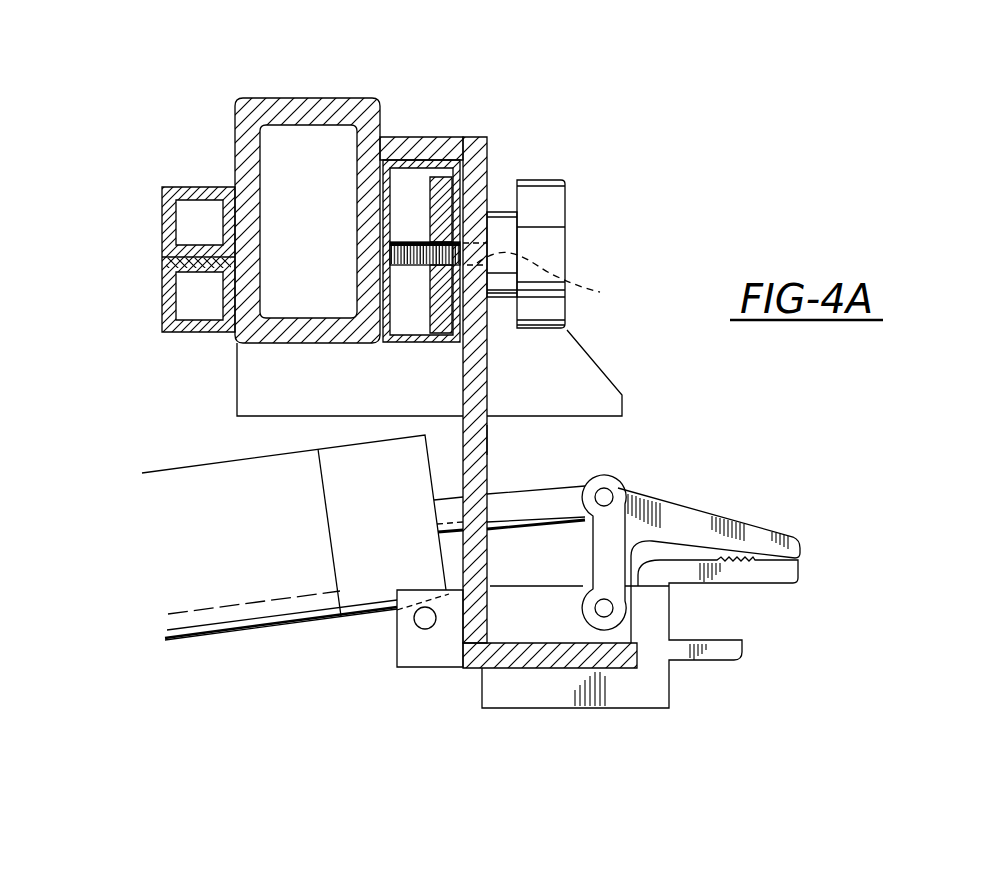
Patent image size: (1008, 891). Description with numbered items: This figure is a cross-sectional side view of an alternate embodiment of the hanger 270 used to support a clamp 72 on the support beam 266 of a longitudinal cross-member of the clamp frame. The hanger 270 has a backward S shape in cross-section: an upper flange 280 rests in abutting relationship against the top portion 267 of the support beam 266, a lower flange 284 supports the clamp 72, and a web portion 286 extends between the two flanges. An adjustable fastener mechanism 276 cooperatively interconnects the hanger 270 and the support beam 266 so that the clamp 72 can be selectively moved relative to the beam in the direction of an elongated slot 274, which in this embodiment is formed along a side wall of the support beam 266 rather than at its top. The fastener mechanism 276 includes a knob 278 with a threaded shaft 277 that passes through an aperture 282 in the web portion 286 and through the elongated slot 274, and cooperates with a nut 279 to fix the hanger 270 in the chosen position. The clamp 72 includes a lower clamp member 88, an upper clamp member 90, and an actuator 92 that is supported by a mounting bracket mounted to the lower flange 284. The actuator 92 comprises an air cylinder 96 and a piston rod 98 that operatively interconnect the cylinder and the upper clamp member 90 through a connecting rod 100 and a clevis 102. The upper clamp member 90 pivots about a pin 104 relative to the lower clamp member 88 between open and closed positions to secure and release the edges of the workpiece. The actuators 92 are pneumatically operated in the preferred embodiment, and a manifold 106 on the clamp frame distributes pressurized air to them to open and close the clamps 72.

The manifold 106 is at (158, 225).
The support beam 266 is at (333, 98).
The top portion 267 is at (407, 160).
The upper flange 280 is at (442, 137).
The nut 279 is at (487, 148).
The lower flange 284 is at (527, 661).
The elongated slot 274 is at (448, 290).
The threaded shaft 277 is at (407, 242).
The adjustable fastener mechanism 276 is at (508, 172).
The knob 278 is at (560, 249).
The aperture 282 is at (557, 274).
The hanger 270 is at (492, 394).
The web portion 286 is at (485, 440).
The actuator 92 is at (138, 497).
The air cylinder 96 is at (262, 551).
The piston rod 98 is at (536, 520).
The clamp 72 is at (783, 529).
The upper clamp member 90 is at (708, 512).
The lower clamp member 88 is at (782, 578).
The clevis 102 is at (600, 478).
The connecting rod 100 is at (612, 496).
The pin 104 is at (614, 609).